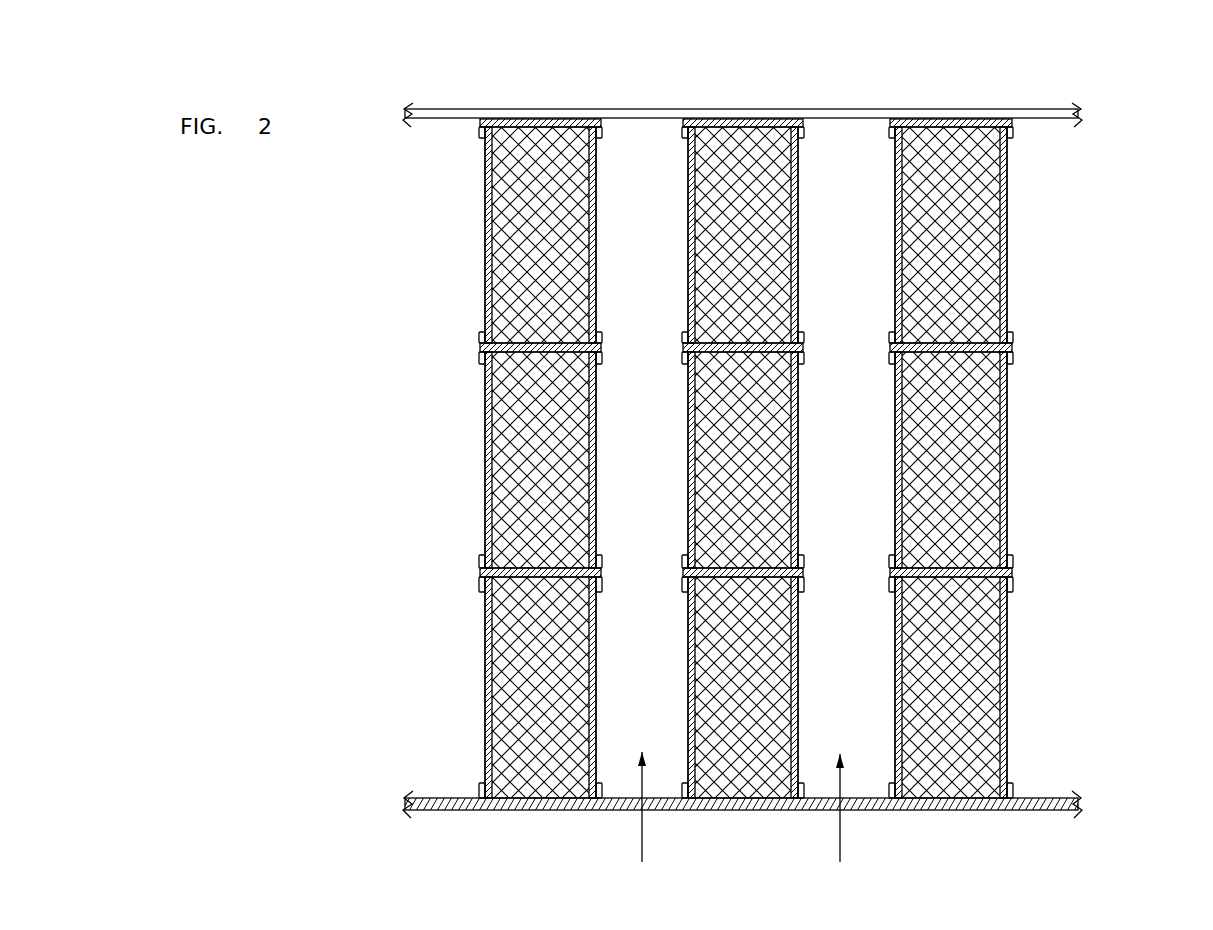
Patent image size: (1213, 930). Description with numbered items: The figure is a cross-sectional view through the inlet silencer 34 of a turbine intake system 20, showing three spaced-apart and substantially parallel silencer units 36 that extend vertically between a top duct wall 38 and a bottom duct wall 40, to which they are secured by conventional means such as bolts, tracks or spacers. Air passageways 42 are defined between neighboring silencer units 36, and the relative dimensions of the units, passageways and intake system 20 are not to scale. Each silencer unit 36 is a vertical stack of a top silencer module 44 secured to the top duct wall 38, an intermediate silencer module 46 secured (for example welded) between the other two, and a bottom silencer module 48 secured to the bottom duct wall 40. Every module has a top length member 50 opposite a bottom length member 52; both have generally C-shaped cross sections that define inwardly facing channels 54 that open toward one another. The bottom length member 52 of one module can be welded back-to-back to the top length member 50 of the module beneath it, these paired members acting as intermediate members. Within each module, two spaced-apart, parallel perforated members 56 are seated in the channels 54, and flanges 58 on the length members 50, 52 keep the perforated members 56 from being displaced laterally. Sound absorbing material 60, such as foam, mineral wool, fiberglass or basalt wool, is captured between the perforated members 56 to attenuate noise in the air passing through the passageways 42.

The intake system 20 is at (1052, 100).
The inlet silencer 34 is at (1048, 238).
The silencer units 36 is at (487, 302).
The top duct wall 38 is at (442, 108).
The bottom duct wall 40 is at (430, 812).
The air passageways 42 is at (745, 821).
The top silencer module 44 is at (490, 198).
The intermediate silencer module 46 is at (488, 455).
The bottom silencer module 48 is at (487, 671).
The top length member 50 is at (482, 127).
The bottom length member 52 is at (482, 341).
The inwardly facing channels 54 is at (588, 122).
The perforated members 56 is at (487, 238).
The flanges 58 is at (482, 139).
The sound absorbing material 60 is at (540, 248).